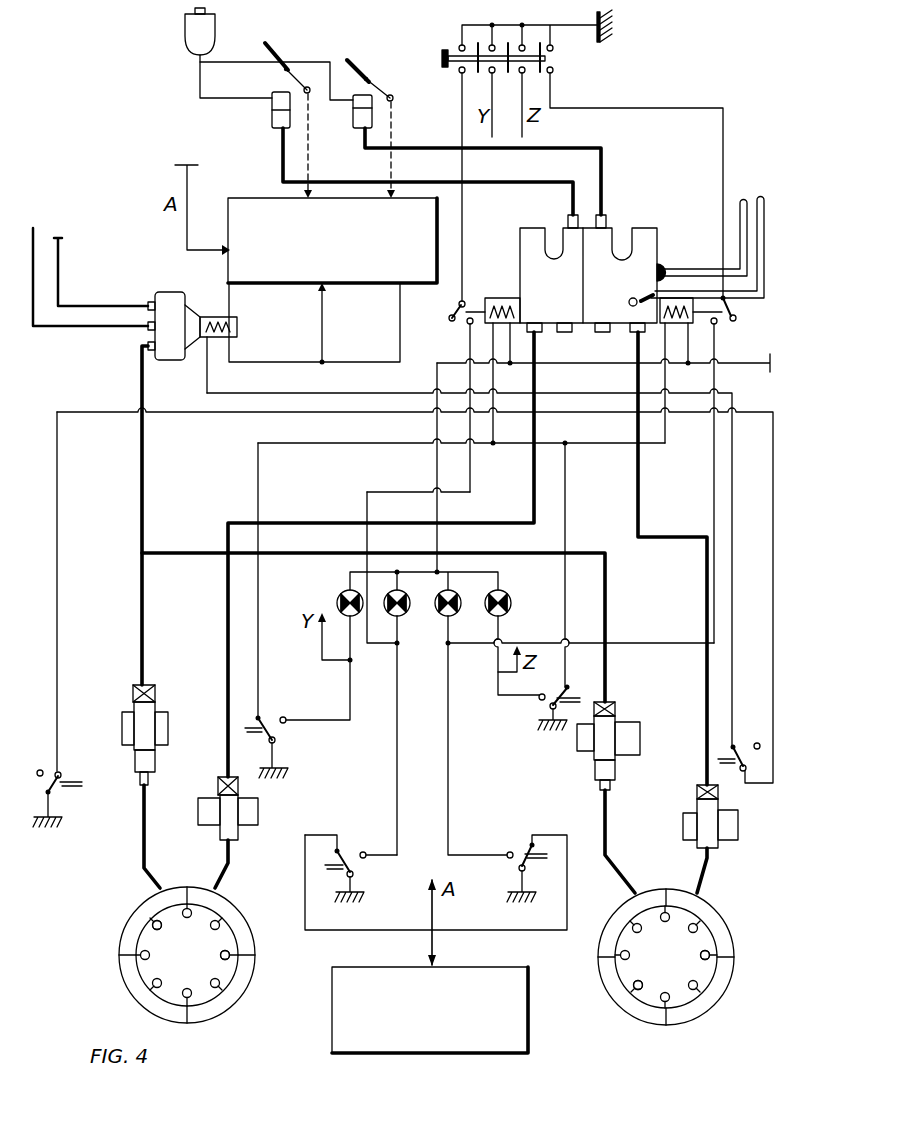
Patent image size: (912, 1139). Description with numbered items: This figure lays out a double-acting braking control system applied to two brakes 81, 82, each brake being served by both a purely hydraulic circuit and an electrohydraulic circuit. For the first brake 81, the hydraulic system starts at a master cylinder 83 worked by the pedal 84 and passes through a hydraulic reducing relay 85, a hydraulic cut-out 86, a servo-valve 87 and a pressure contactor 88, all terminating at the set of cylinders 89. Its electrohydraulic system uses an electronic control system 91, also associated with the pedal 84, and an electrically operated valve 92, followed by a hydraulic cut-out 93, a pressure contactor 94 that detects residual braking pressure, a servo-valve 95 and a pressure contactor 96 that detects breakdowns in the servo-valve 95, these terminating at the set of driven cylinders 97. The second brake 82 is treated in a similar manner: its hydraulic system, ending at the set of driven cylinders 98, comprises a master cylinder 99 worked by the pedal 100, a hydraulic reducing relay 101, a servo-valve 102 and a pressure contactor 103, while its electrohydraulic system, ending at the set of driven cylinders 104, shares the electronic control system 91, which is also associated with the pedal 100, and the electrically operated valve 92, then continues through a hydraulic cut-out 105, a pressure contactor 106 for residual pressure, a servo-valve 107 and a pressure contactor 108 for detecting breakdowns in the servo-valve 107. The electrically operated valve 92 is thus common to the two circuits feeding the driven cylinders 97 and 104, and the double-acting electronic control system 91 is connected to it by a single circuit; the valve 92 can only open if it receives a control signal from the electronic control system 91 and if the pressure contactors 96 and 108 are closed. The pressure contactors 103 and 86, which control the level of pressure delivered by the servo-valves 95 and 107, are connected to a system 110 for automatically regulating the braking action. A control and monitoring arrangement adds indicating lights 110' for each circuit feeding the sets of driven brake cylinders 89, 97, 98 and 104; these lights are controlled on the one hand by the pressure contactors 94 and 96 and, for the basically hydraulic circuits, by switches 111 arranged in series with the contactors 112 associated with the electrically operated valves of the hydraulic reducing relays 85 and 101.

The brake 81 is at (108, 951).
The brake 82 is at (594, 975).
The master cylinder 83 is at (275, 120).
The pedal 84 is at (282, 43).
The hydraulic reducing relay 85 is at (534, 234).
The hydraulic cut-out 86 is at (218, 785).
The servo-valve 87 is at (208, 820).
The pressure contactor 88 is at (258, 825).
The set of cylinders 89 is at (223, 957).
The electronic control system 91 is at (270, 218).
The electrically operated valve 92 is at (170, 298).
The hydraulic cut-out 93 is at (157, 697).
The pressure contactor 94 is at (168, 729).
The servo-valve 95 is at (124, 720).
The pressure contactor 96 is at (50, 770).
The set of driven cylinders 97 is at (159, 930).
The set of driven cylinders 98 is at (705, 959).
The master cylinder 99 is at (355, 120).
The pedal 100 is at (365, 57).
The hydraulic reducing relay 101 is at (598, 246).
The servo-valve 102 is at (740, 835).
The pressure contactor 103 is at (515, 850).
The set of driven cylinders 104 is at (656, 985).
The hydraulic cut-out 105 is at (618, 709).
The pressure contactor 106 is at (537, 706).
The servo-valve 107 is at (658, 725).
The pressure contactor 108 is at (616, 770).
The system for automatically regulating the braking action 110 is at (408, 1010).
The indicating lights 110' is at (404, 590).
The switches 111 is at (460, 46).
The contactors 112 is at (452, 311).